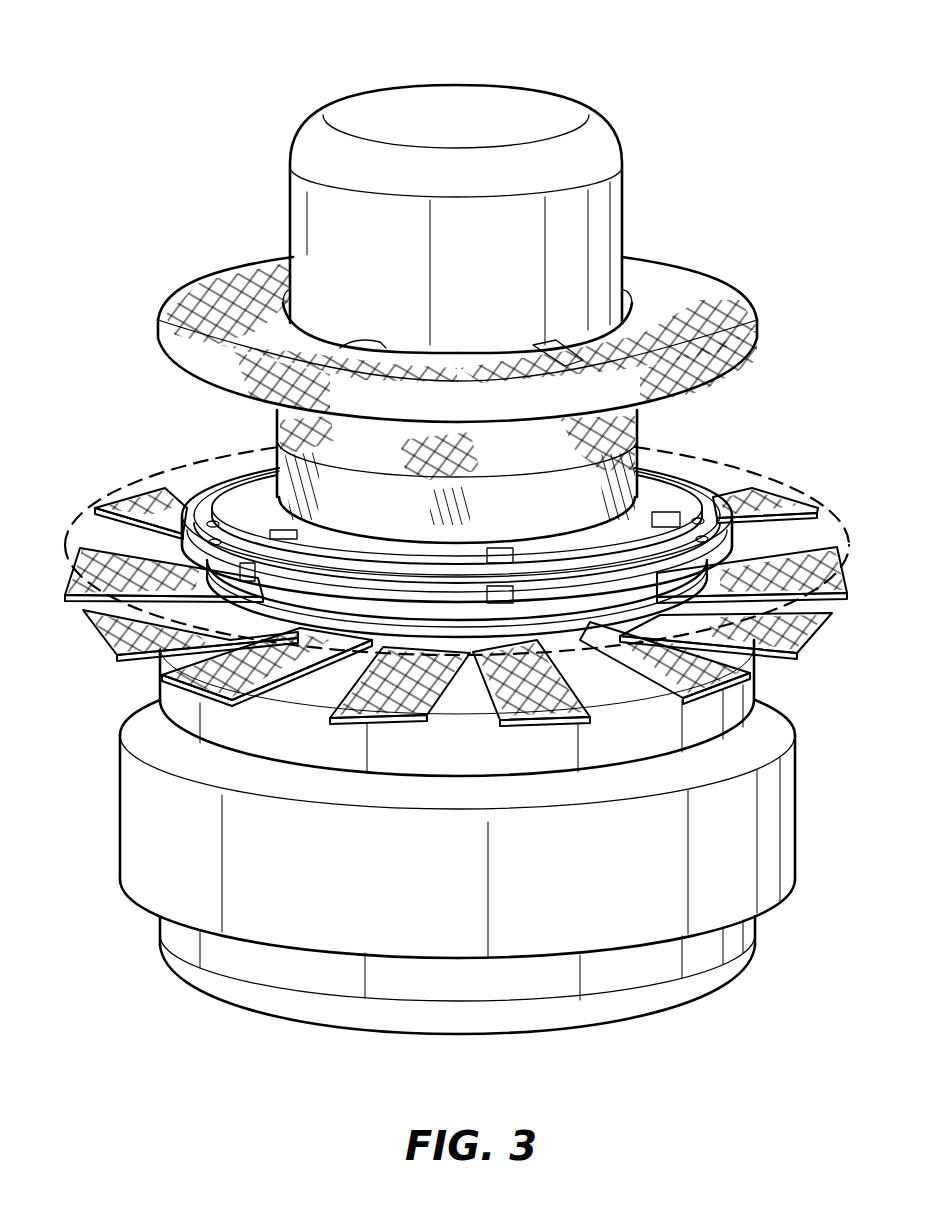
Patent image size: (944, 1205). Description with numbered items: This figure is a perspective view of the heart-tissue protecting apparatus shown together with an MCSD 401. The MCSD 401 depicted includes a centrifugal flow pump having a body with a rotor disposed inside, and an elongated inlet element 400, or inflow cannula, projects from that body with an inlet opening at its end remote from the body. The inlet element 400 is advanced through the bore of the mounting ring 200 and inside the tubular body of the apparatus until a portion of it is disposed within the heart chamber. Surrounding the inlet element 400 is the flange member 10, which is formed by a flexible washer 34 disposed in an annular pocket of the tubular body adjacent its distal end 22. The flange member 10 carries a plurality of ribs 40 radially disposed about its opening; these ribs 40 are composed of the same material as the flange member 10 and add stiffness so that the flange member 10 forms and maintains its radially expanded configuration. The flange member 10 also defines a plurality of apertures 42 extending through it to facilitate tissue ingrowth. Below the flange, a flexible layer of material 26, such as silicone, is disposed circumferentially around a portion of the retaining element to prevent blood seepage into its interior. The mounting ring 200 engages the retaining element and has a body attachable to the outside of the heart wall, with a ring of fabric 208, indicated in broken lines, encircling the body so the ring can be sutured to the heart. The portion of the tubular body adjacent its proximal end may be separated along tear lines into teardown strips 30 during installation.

The flange member 10 is at (797, 281).
The distal end 22 is at (683, 266).
The flexible layer of material 26 is at (430, 508).
The teardown strips 30 is at (96, 616).
The flexible washer 34 is at (253, 265).
The ribs 40 is at (350, 355).
The apertures 42 is at (716, 293).
The mounting ring 200 is at (700, 512).
The ring of fabric 208 is at (106, 493).
The inlet element 400 is at (441, 105).
The MCSD 401 is at (614, 875).